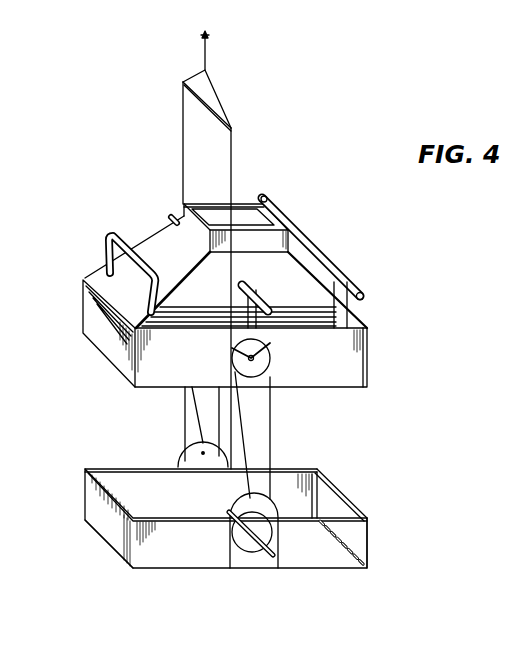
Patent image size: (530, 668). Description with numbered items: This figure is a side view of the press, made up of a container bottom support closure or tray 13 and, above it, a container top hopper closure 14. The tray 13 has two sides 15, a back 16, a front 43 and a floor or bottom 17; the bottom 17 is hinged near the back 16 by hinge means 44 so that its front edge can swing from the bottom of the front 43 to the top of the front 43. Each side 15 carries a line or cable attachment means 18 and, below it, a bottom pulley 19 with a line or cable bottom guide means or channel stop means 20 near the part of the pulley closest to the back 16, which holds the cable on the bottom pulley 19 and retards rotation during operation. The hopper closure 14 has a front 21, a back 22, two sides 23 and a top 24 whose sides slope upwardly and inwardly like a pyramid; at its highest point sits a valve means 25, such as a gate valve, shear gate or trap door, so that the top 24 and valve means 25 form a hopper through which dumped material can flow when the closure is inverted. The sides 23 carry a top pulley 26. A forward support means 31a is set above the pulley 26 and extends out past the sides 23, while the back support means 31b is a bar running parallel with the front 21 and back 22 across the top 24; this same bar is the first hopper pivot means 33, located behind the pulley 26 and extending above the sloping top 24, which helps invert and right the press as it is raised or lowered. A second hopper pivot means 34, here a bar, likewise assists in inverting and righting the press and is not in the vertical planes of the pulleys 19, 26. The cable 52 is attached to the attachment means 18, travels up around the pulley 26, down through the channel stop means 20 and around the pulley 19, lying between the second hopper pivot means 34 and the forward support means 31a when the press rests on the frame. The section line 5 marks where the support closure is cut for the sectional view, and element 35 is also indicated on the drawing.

The section line 5— 5 is at (60, 525).
The container bottom support closure or tray 13 is at (82, 495).
The hopper closure 14 is at (366, 327).
The sides 15 is at (295, 485).
The back 16 is at (370, 538).
The floor or bottom 17 is at (150, 513).
The line or cable attachment means 18 is at (257, 490).
The bottom pulley 19 is at (242, 556).
The line or cable bottom guide means or channel stop means 20 is at (270, 556).
The front 21 is at (103, 340).
The back 22 is at (368, 343).
The sides 23 is at (355, 368).
The top 24 is at (291, 267).
The valve means 25 is at (268, 197).
The top pulley 26 is at (265, 364).
The forward support means 31a is at (268, 298).
The back support means 31b is at (359, 289).
The first hopper pivot means 33 is at (324, 253).
The second hopper pivot means 34 is at (117, 234).
The support 35 is at (529, 558).
The front 43 is at (108, 528).
The hinge means 44 is at (344, 534).
The cable 52 is at (182, 111).